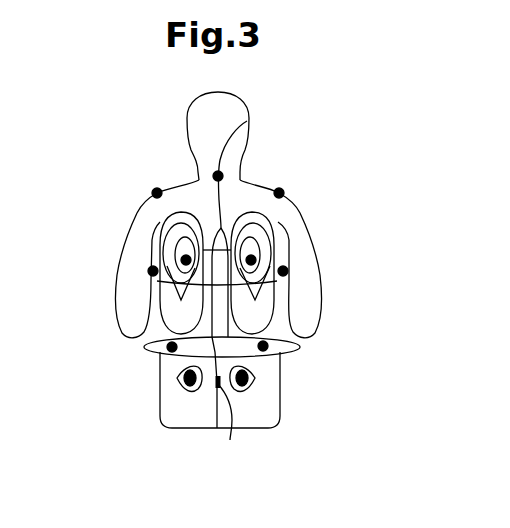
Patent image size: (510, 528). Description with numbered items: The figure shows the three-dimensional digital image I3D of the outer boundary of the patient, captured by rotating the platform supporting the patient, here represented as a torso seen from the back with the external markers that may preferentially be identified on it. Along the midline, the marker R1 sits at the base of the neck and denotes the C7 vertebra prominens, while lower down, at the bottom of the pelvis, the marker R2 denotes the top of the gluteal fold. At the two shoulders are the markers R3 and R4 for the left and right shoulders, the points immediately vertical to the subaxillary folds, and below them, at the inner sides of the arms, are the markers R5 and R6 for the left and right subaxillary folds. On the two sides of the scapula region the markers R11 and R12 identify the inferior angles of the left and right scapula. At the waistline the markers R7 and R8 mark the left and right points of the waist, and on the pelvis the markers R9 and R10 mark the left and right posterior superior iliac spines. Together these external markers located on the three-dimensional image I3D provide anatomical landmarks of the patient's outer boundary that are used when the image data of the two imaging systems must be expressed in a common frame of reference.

The three-dimensional digital image I3D is at (100, 318).
The C7 vertebra prominens marker R1 is at (248, 121).
The top of gluteal fold marker R2 is at (230, 440).
The left shoulder marker R3 is at (280, 189).
The right shoulder marker R4 is at (156, 191).
The left subaxillary fold marker R5 is at (284, 271).
The right subaxillary fold marker R6 is at (152, 271).
The left point of the waist marker R7 is at (264, 346).
The right point of the waist marker R8 is at (171, 347).
The left posterior superior iliac spine marker R9 is at (256, 376).
The right posterior superior iliac spine marker R10 is at (178, 380).
The inferior angle of the left scapula marker R11 is at (251, 259).
The inferior angle of the right scapula marker R12 is at (185, 259).